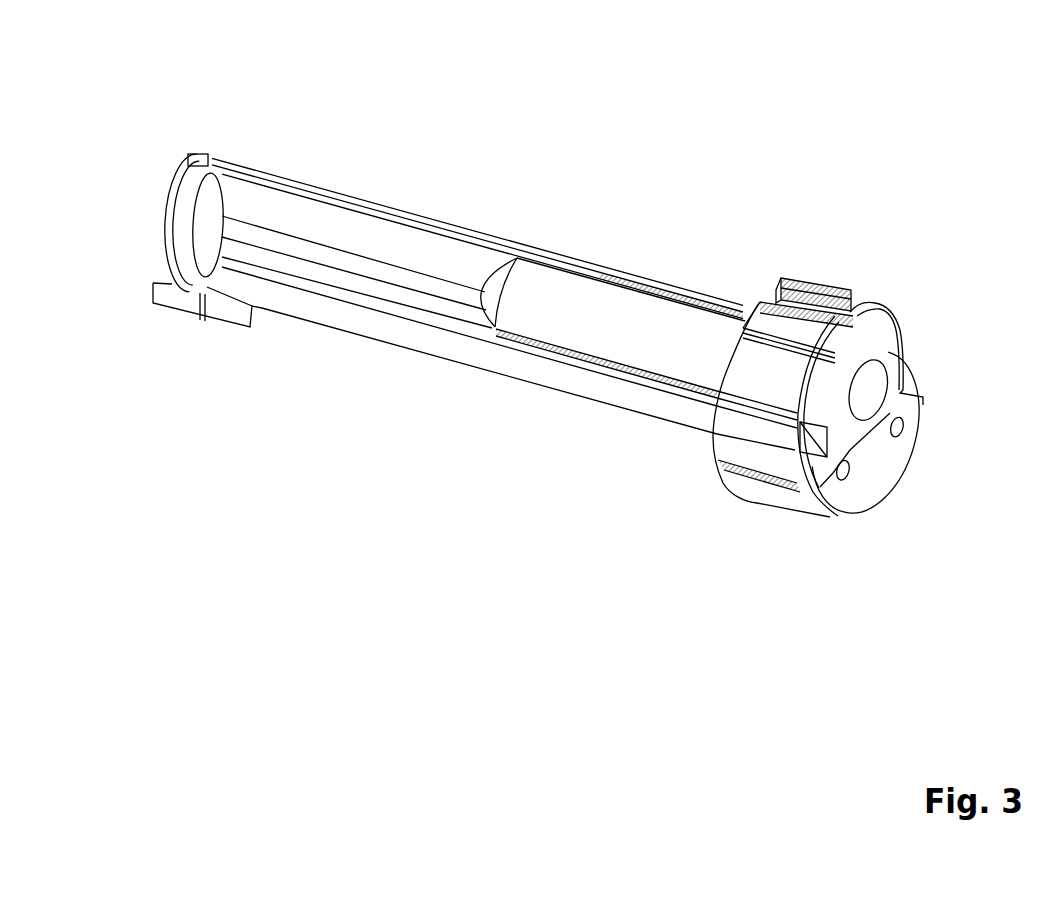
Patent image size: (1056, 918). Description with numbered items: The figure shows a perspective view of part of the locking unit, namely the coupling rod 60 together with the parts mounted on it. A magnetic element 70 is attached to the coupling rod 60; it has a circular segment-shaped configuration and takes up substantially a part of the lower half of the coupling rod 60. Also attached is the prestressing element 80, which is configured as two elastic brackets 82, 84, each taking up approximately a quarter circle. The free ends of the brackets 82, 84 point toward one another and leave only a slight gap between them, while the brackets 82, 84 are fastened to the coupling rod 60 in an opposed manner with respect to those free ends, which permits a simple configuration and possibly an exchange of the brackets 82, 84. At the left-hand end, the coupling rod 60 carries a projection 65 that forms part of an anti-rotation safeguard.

The projection 65 is at (207, 155).
The coupling rod 60 is at (577, 300).
The prestressing element 80 is at (760, 320).
The bracket 82 is at (747, 403).
The bracket 84 is at (891, 315).
The magnetic element 70 is at (872, 473).